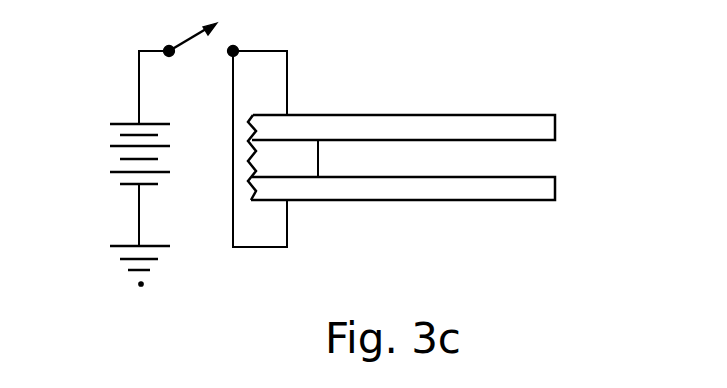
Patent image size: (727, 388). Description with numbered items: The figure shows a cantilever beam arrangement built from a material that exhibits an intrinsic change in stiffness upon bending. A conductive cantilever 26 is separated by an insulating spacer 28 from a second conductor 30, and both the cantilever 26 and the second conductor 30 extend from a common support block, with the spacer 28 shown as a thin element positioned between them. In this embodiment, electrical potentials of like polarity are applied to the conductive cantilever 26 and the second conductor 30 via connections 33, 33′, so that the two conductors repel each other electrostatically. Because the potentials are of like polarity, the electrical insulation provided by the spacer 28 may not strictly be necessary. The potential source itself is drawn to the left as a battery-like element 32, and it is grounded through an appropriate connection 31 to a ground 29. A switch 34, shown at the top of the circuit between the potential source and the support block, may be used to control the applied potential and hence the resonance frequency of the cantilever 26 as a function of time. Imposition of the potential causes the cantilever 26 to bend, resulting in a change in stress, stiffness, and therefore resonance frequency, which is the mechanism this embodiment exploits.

The conductive cantilever 26 is at (558, 130).
The insulating spacer 28 is at (322, 162).
The ground 29 is at (130, 270).
The second conductor 30 is at (558, 190).
The connection 31 is at (138, 218).
The voltage source 32 is at (115, 146).
The connection 33 is at (287, 76).
The connection 33′ is at (287, 222).
The switch 34 is at (192, 36).